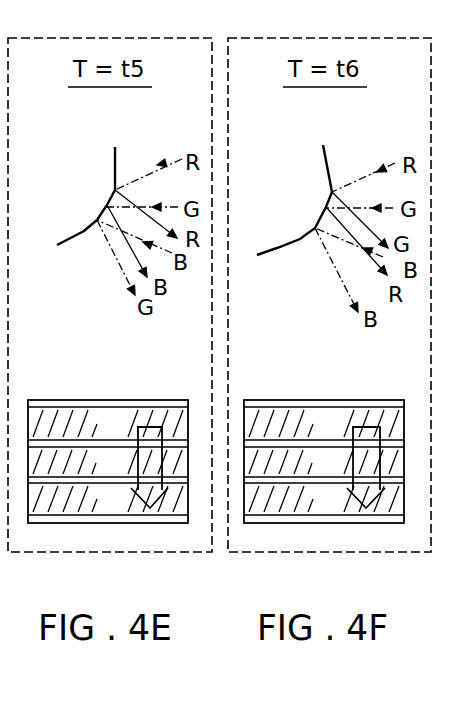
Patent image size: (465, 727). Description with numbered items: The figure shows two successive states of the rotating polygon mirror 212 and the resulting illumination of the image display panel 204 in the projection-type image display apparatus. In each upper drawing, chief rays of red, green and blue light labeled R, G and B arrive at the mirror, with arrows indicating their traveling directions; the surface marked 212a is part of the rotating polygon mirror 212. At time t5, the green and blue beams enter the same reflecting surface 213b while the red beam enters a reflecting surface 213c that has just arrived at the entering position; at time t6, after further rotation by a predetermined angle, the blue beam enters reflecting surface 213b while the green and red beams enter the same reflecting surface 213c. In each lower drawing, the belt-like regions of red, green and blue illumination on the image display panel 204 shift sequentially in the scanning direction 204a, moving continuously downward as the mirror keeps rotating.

In FIG. 4E, the image display panel 204 is at (88, 398).
In FIG. 4F, the image display panel 204 is at (304, 398).
In FIG. 4E, the scanning direction 204a is at (150, 427).
In FIG. 4F, the scanning direction 204a is at (366, 427).
In FIG. 4E, the rotating polygon mirror 212 is at (100, 212).
In FIG. 4F, the rotating polygon mirror 212 is at (312, 216).
In FIG. 4E, the reflecting surface 212a is at (65, 212).
In FIG. 4F, the reflecting surface 212a is at (282, 220).
In FIG. 4E, the reflecting surface 213b is at (97, 223).
In FIG. 4F, the reflecting surface 213b is at (310, 231).
In FIG. 4E, the reflecting surface 213c is at (119, 158).
In FIG. 4F, the reflecting surface 213c is at (335, 185).